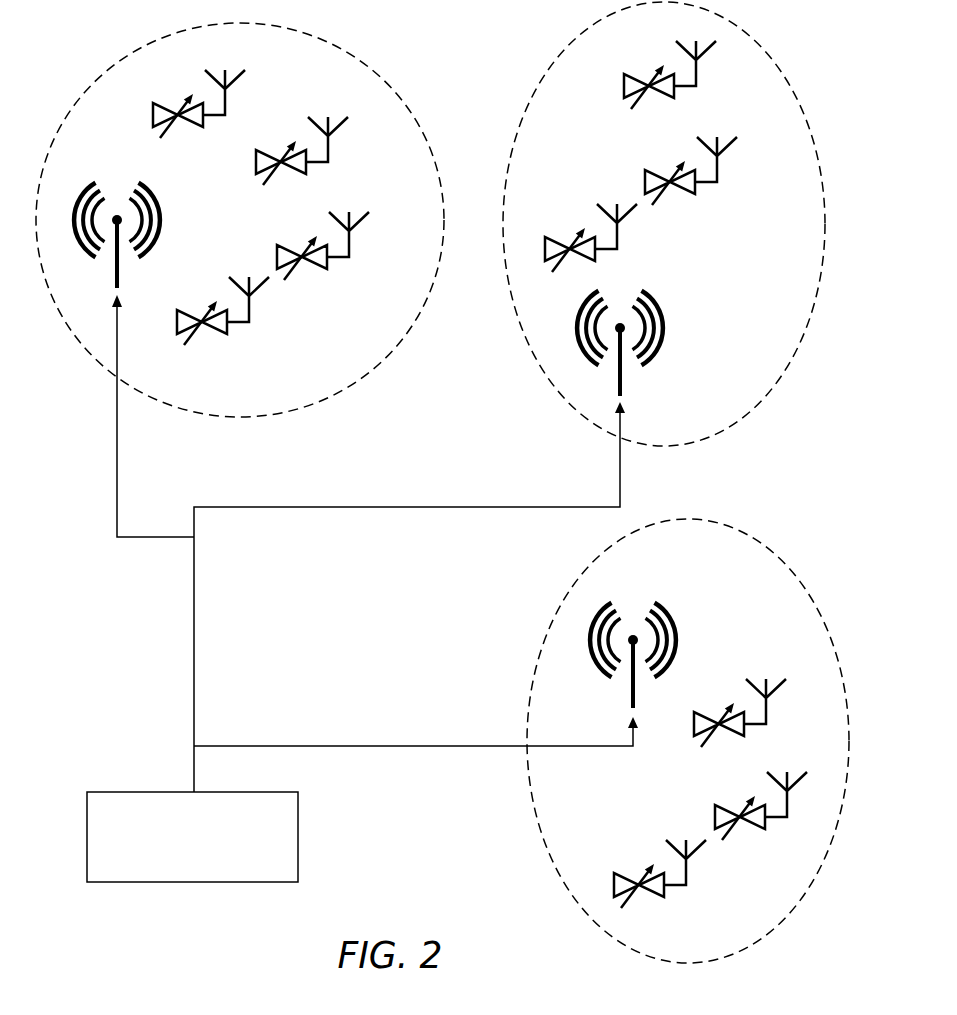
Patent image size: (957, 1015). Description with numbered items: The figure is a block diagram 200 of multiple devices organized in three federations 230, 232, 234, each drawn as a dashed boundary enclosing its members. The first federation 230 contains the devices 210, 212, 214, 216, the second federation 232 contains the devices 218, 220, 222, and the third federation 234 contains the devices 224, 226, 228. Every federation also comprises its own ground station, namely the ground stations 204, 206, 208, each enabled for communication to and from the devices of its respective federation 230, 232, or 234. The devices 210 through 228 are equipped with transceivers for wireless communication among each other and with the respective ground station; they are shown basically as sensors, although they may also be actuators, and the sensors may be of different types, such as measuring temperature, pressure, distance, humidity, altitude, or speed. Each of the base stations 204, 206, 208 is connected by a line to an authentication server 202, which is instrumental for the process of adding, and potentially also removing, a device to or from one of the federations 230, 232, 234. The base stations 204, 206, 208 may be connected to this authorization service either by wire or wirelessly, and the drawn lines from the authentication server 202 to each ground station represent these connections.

The block diagram 200 is at (485, 51).
The authentication server 202 is at (298, 802).
The ground station 204 is at (163, 213).
The ground station 206 is at (664, 316).
The ground station 208 is at (680, 632).
The device 210 is at (199, 102).
The device 212 is at (302, 150).
The device 214 is at (322, 245).
The device 216 is at (223, 311).
The device 218 is at (670, 75).
The device 220 is at (691, 169).
The device 222 is at (591, 236).
The device 224 is at (740, 710).
The device 226 is at (761, 806).
The device 228 is at (654, 870).
The federation 230 is at (255, 392).
The federation 232 is at (760, 241).
The federation 234 is at (715, 576).